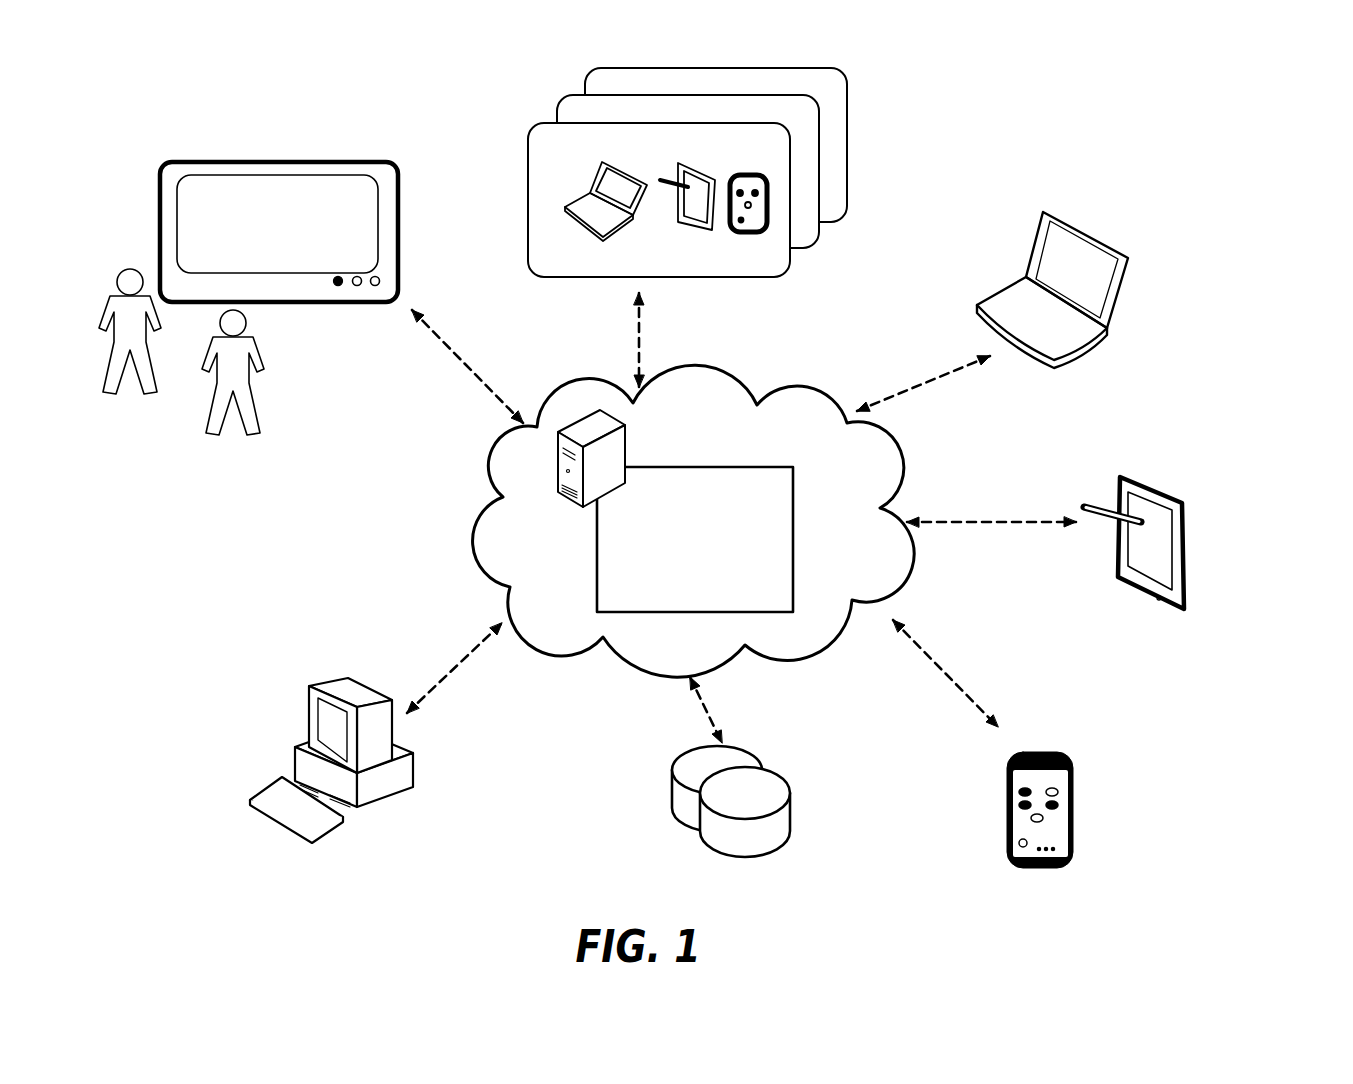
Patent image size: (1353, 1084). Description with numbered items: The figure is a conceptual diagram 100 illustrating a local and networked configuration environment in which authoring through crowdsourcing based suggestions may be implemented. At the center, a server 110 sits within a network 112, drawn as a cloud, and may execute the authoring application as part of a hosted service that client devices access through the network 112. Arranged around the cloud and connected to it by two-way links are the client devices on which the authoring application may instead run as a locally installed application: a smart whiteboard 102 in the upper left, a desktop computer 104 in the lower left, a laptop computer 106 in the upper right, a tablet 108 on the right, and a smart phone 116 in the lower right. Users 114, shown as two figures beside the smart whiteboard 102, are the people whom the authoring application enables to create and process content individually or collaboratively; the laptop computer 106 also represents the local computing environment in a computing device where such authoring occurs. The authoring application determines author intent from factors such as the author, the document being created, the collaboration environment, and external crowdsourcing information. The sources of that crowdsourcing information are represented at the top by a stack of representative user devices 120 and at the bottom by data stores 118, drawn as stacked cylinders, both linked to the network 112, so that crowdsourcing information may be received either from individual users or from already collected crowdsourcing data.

The conceptual diagram 100 is at (1243, 73).
The smart whiteboard 102 is at (312, 140).
The desktop computer 104 is at (287, 697).
The laptop computer 106 is at (1087, 197).
The tablet 108 is at (1188, 497).
The server 110 is at (628, 445).
The network 112 is at (760, 360).
The users 114 is at (178, 428).
The smart phone 116 is at (1023, 875).
The data stores 118 is at (770, 750).
The representative user devices 120 is at (863, 95).